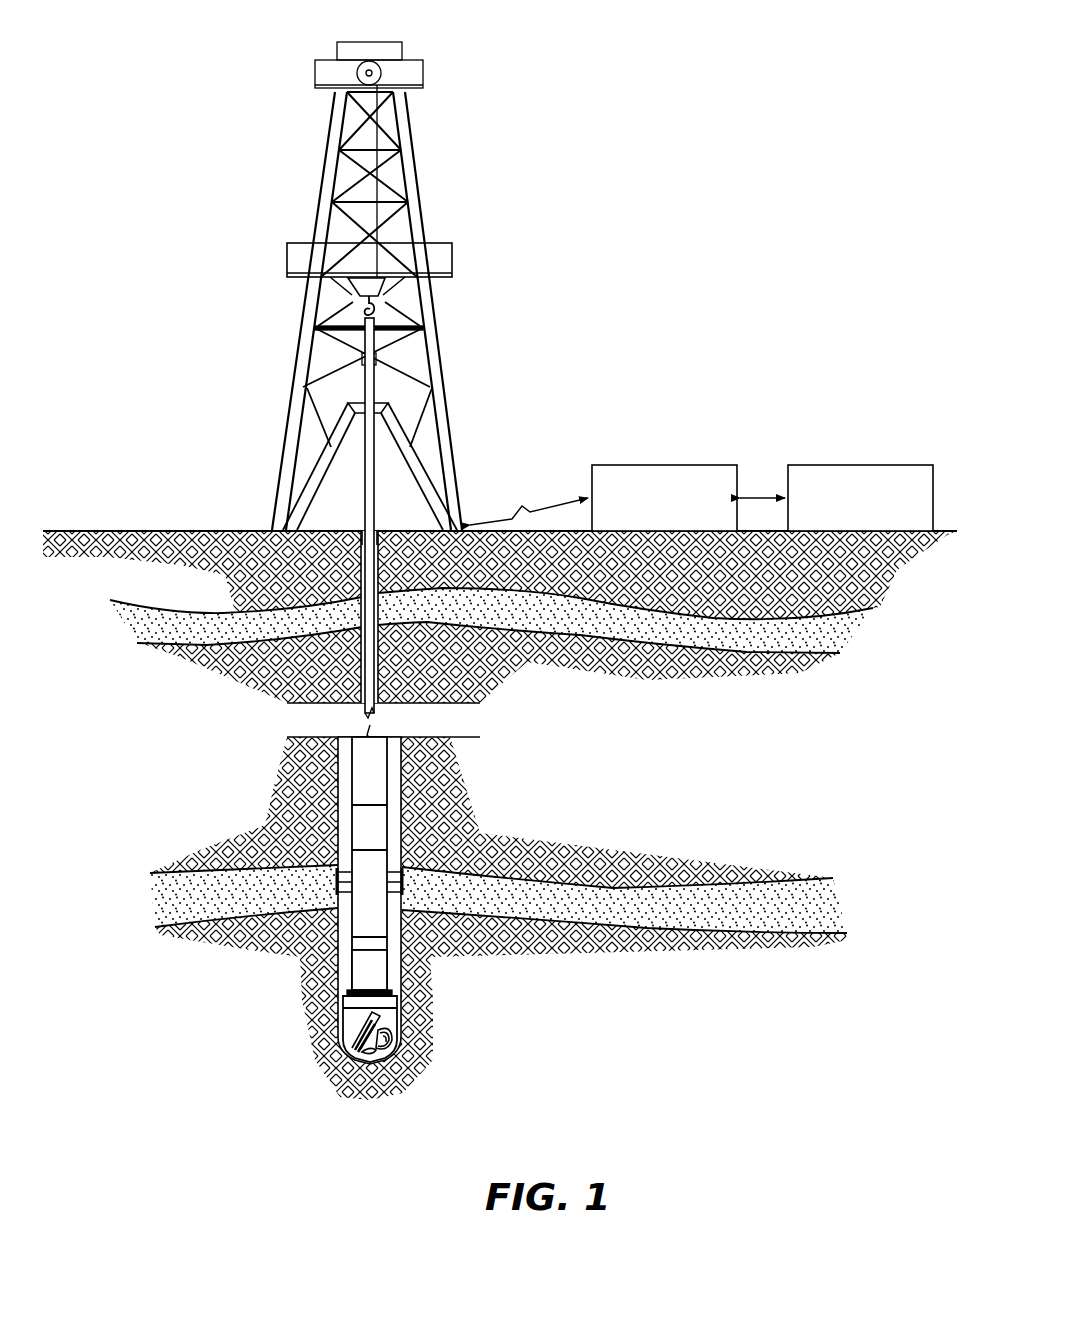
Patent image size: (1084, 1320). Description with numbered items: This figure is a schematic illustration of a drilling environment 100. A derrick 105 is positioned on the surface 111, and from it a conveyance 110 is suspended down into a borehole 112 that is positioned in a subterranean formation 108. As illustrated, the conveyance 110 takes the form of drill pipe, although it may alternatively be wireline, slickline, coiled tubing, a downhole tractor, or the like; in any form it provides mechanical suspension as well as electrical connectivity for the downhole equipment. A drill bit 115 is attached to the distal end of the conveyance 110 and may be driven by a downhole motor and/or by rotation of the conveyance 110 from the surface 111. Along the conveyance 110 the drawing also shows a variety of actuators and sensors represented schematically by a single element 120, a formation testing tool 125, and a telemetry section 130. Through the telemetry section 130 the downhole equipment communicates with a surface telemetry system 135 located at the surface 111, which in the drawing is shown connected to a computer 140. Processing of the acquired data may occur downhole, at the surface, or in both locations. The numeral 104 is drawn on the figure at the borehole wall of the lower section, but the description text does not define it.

The environment 100 is at (719, 99).
The borehole 104 is at (393, 800).
The derrick 105 is at (423, 73).
The subterranean formation 108 is at (443, 670).
The conveyance 110 is at (363, 383).
The surface 111 is at (112, 530).
The borehole 112 is at (377, 528).
The drill bit 115 is at (400, 1020).
The actuators and sensors 120 is at (348, 970).
The formation testing tool 125 is at (407, 943).
The telemetry section 130 is at (352, 825).
The surface telemetry system 135 is at (670, 465).
The computer 140 is at (870, 465).